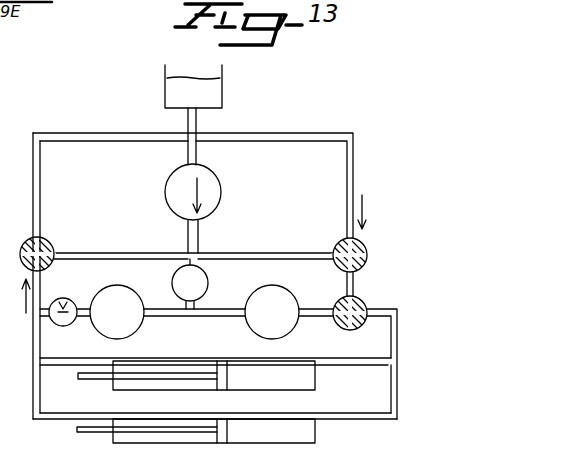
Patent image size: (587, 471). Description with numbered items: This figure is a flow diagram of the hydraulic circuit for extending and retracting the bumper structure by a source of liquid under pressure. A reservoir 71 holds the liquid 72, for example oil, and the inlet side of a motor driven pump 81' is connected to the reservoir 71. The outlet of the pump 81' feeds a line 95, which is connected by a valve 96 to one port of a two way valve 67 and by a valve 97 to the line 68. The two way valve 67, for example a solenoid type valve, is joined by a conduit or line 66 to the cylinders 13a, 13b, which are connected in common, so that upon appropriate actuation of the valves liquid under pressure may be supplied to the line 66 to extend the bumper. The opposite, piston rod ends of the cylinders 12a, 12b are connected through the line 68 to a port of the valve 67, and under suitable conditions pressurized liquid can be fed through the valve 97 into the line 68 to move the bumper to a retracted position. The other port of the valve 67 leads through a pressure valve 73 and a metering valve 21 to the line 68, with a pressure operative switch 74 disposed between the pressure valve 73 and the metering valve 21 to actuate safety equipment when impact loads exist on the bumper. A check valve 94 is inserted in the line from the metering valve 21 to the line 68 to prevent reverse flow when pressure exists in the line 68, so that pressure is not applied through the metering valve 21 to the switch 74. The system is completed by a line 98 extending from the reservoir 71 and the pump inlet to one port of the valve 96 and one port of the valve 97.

The reservoir 71 is at (222, 72).
The liquid 72 is at (208, 97).
The line 98 is at (283, 132).
The motor driven pump 81' is at (216, 208).
The line 95 is at (227, 250).
The valve 97 is at (43, 243).
The valve 96 is at (342, 242).
The two way valve 67 is at (357, 295).
The line 68 is at (33, 365).
The check valve 94 is at (62, 298).
The metering valve 21 is at (133, 327).
The pressure operative switch 74 is at (208, 277).
The pressure valve 73 is at (308, 282).
The conduit or line 66 is at (387, 358).
The cylinder 13a is at (307, 377).
The cylinder 12a is at (128, 378).
The cylinder 13b is at (315, 433).
The cylinder 12b is at (143, 430).